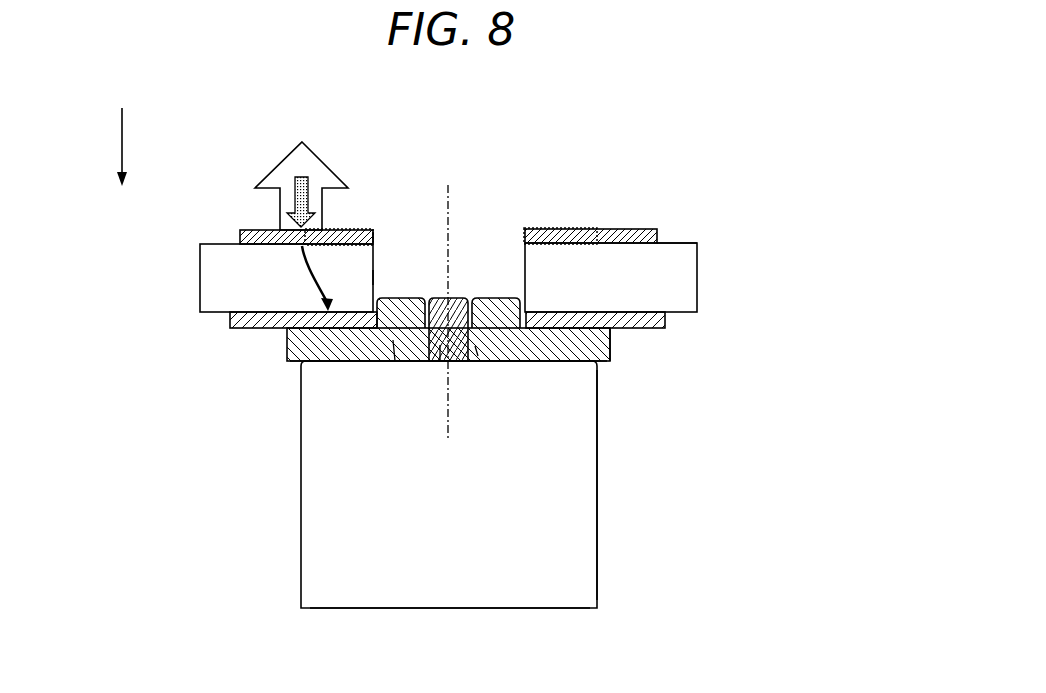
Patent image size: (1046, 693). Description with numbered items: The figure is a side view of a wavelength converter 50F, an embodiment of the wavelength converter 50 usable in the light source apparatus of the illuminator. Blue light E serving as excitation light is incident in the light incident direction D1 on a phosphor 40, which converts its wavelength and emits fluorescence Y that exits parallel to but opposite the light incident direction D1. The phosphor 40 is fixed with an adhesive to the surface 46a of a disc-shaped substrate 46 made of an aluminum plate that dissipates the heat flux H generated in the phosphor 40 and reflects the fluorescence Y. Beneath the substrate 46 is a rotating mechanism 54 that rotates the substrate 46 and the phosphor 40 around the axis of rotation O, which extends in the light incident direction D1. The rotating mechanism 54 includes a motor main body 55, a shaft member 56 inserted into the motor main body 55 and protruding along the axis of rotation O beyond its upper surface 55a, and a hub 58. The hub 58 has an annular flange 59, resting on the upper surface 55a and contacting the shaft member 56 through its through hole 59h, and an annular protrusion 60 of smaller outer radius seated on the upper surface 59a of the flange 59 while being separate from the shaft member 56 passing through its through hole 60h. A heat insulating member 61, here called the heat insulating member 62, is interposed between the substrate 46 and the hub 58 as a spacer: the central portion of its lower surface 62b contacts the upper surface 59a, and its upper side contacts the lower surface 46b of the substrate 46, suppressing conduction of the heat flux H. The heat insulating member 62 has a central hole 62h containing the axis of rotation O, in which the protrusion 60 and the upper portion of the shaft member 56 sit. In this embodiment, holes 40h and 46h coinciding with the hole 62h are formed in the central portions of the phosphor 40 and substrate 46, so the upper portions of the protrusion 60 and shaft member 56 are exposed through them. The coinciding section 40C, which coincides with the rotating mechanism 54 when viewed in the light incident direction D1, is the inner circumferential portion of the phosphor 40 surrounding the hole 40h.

The rotating mechanism 54 is at (605, 548).
The motor main body 55 is at (597, 483).
The upper surface of the motor main body 55a is at (538, 346).
The shaft member 56 is at (478, 356).
The hub 58 is at (620, 348).
The flange 59 is at (287, 340).
The upper surface of the flange 59a is at (310, 328).
The through hole of the flange 59h is at (440, 361).
The protrusion 60 is at (487, 298).
The through hole of the protrusion 60h is at (450, 300).
The heat insulating member 61 is at (549, 355).
The heat insulating member 62 is at (668, 325).
The lower surface of the heat insulating member 62b is at (593, 362).
The hole of the heat insulating member 62h is at (395, 361).
The phosphor 40 is at (643, 222).
The coinciding section 40C is at (358, 226).
The hole of the phosphor 40h is at (373, 235).
The substrate 46 is at (697, 258).
The surface of the substrate 46a is at (683, 243).
The lower surface of the substrate 46b is at (682, 312).
The hole of the substrate 46h is at (373, 277).
The wavelength converter 50F is at (505, 216).
The wavelength converter 50 is at (505, 216).
The light incident direction D1 is at (138, 147).
The fluorescence Y is at (283, 160).
The blue light E is at (293, 210).
The heat flux H is at (307, 279).
The axis of rotation O is at (447, 299).